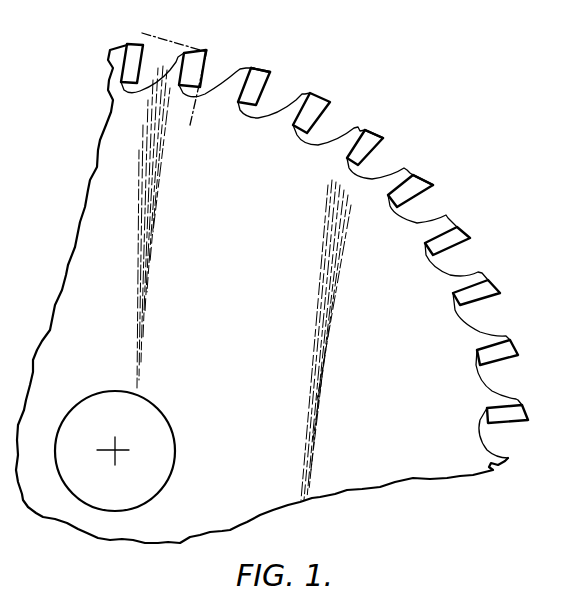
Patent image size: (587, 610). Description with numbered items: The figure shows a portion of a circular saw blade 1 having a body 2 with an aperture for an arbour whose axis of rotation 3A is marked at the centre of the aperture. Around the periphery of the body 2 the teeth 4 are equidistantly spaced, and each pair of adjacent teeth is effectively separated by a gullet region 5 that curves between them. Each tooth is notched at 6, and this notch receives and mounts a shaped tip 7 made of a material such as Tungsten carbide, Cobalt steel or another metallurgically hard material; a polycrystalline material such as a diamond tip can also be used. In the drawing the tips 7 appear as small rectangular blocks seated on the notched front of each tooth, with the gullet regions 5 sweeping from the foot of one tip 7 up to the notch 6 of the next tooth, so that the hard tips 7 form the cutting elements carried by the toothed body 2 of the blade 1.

The circular saw blade 1 is at (102, 237).
The body 2 is at (247, 298).
The axis of rotation 3A is at (116, 448).
The teeth 4 is at (122, 62).
The gullet region 5 is at (154, 55).
The notch 6 is at (440, 218).
The shaped tip 7 is at (268, 63).